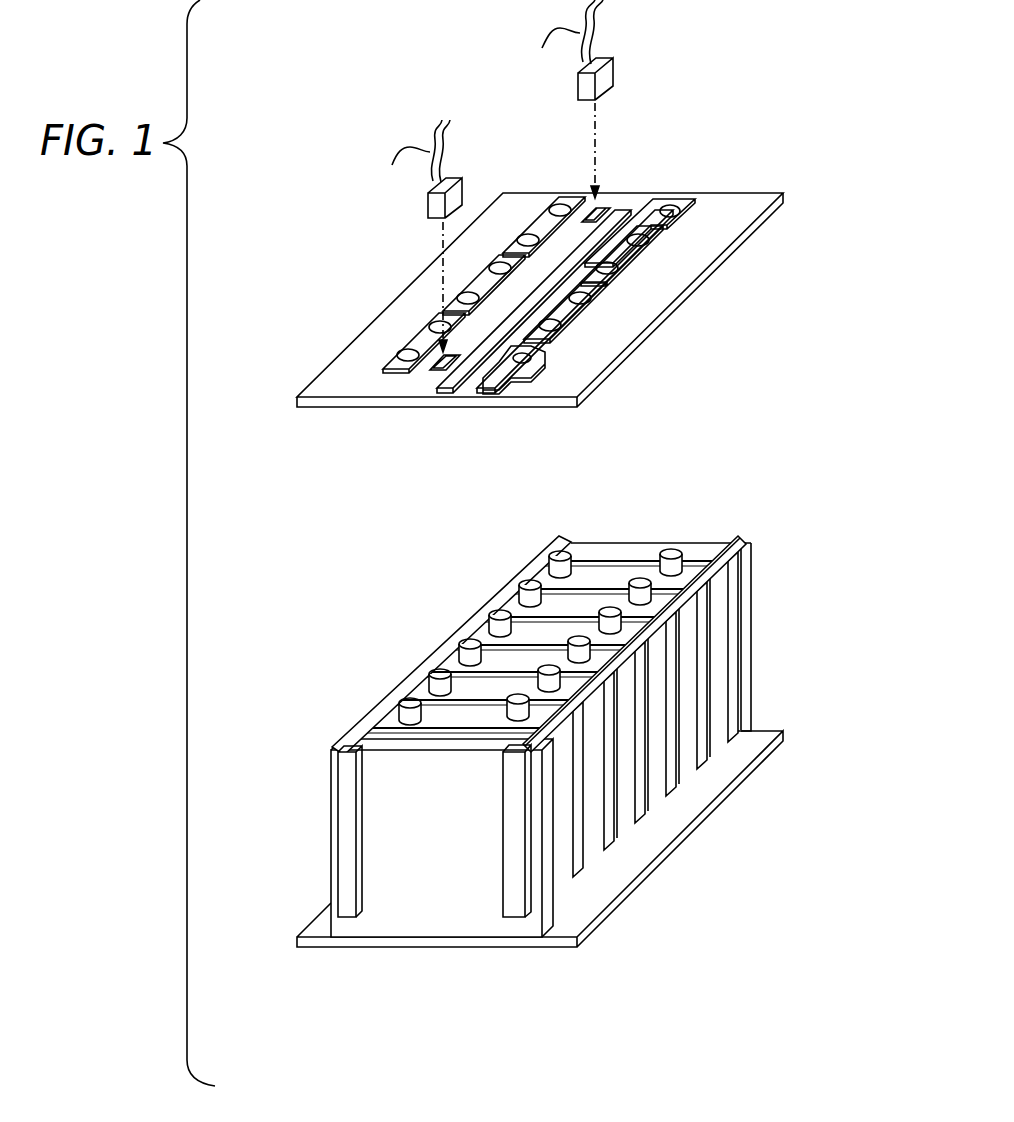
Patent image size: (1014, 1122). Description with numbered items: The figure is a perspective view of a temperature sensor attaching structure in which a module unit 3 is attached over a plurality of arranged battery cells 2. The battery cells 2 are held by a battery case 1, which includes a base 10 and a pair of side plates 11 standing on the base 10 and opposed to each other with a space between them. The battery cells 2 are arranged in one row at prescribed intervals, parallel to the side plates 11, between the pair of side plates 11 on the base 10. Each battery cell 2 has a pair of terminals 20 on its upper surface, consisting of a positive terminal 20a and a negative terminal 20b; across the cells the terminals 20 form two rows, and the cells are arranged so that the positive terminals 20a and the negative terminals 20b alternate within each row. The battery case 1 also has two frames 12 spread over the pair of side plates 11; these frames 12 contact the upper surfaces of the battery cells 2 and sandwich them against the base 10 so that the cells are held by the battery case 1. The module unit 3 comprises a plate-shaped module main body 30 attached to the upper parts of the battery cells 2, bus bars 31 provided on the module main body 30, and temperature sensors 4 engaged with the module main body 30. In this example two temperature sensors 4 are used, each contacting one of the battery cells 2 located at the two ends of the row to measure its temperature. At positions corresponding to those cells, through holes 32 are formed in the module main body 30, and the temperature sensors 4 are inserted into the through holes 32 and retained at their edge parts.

The battery case 1 is at (526, 728).
The battery cell 2 is at (563, 882).
The module unit 3 is at (565, 272).
The temperature sensor 4 is at (428, 204).
The base 10 is at (303, 948).
The side plate 11 is at (753, 630).
The frame 12 is at (348, 797).
The terminal 20 is at (512, 611).
The positive terminal 20a is at (500, 612).
The negative terminal 20b is at (530, 583).
The module main body 30 is at (752, 232).
The bus bar 31 is at (417, 340).
The through hole 32 is at (607, 203).